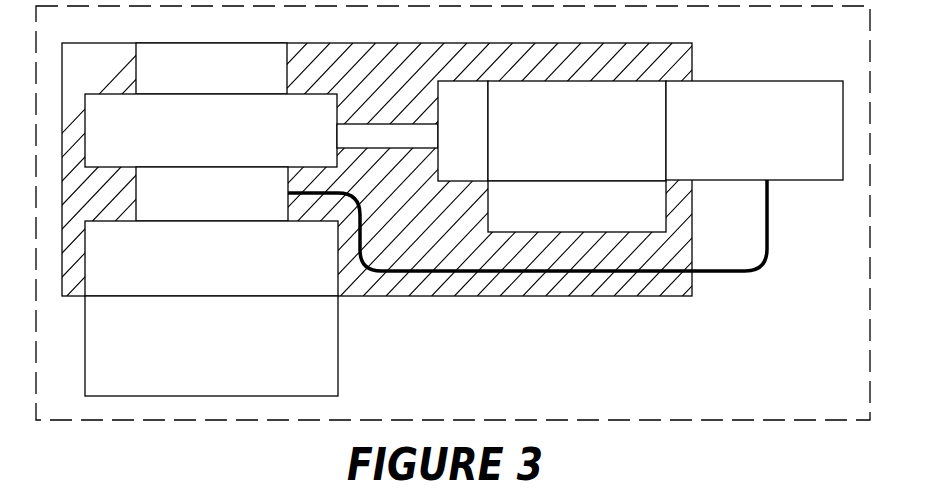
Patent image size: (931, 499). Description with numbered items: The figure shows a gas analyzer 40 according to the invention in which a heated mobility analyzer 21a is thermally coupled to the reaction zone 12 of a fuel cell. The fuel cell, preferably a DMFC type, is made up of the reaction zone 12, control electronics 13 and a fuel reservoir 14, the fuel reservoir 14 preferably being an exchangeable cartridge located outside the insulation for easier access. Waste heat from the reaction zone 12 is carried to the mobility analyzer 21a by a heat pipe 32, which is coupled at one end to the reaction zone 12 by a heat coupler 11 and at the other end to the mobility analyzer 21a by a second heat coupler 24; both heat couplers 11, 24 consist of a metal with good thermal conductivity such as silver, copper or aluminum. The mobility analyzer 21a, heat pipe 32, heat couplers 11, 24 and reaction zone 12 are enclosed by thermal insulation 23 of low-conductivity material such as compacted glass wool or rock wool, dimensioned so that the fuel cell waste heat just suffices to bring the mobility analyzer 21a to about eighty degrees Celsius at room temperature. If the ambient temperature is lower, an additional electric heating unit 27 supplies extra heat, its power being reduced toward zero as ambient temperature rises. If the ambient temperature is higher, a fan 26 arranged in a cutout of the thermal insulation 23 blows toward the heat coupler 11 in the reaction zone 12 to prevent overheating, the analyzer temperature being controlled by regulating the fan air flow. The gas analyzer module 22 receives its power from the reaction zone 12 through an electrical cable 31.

The heat coupler 11 is at (211, 130).
The reaction zone 12 is at (212, 194).
The control electronics 13 is at (211, 258).
The fuel reservoir 14 is at (211, 346).
The heated mobility analyzer 21a is at (577, 131).
The gas analyzer module 22 is at (754, 130).
The thermal insulation 23 is at (461, 169).
The heat coupler 24 is at (463, 131).
The fan 26 is at (211, 68).
The additional electric heating unit 27 is at (577, 206).
The electrical cable 31 is at (732, 275).
The heat pipe 32 is at (387, 136).
The gas analyzer 40 is at (453, 213).